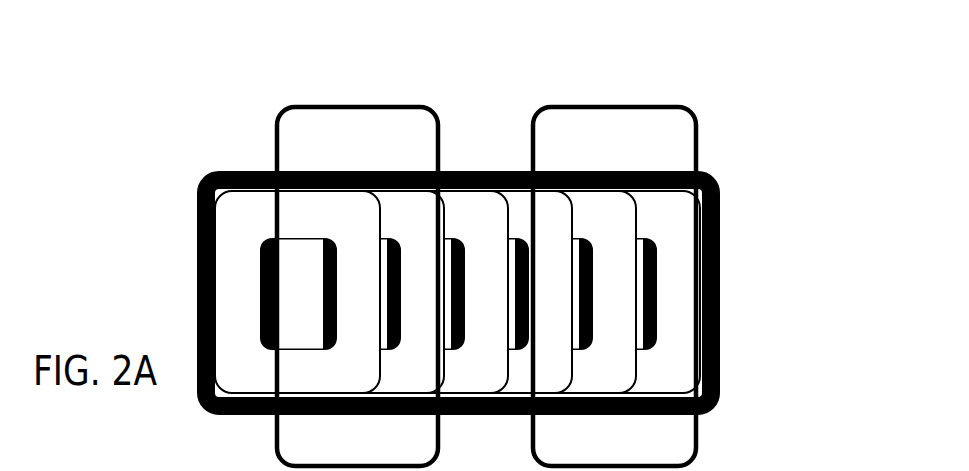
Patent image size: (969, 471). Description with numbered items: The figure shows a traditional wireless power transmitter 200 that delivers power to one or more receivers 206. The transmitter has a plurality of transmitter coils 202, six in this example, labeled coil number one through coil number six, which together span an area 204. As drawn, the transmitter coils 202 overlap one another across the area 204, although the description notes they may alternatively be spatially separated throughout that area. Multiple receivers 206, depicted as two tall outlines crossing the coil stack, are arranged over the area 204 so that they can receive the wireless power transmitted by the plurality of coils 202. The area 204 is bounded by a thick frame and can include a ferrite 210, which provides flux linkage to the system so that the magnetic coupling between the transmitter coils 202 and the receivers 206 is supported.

The wireless power transmitter 200 is at (198, 77).
The transmitter coils 202 is at (225, 213).
The area 204 is at (720, 255).
The receivers 206 is at (553, 116).
The ferrite 210 is at (720, 328).